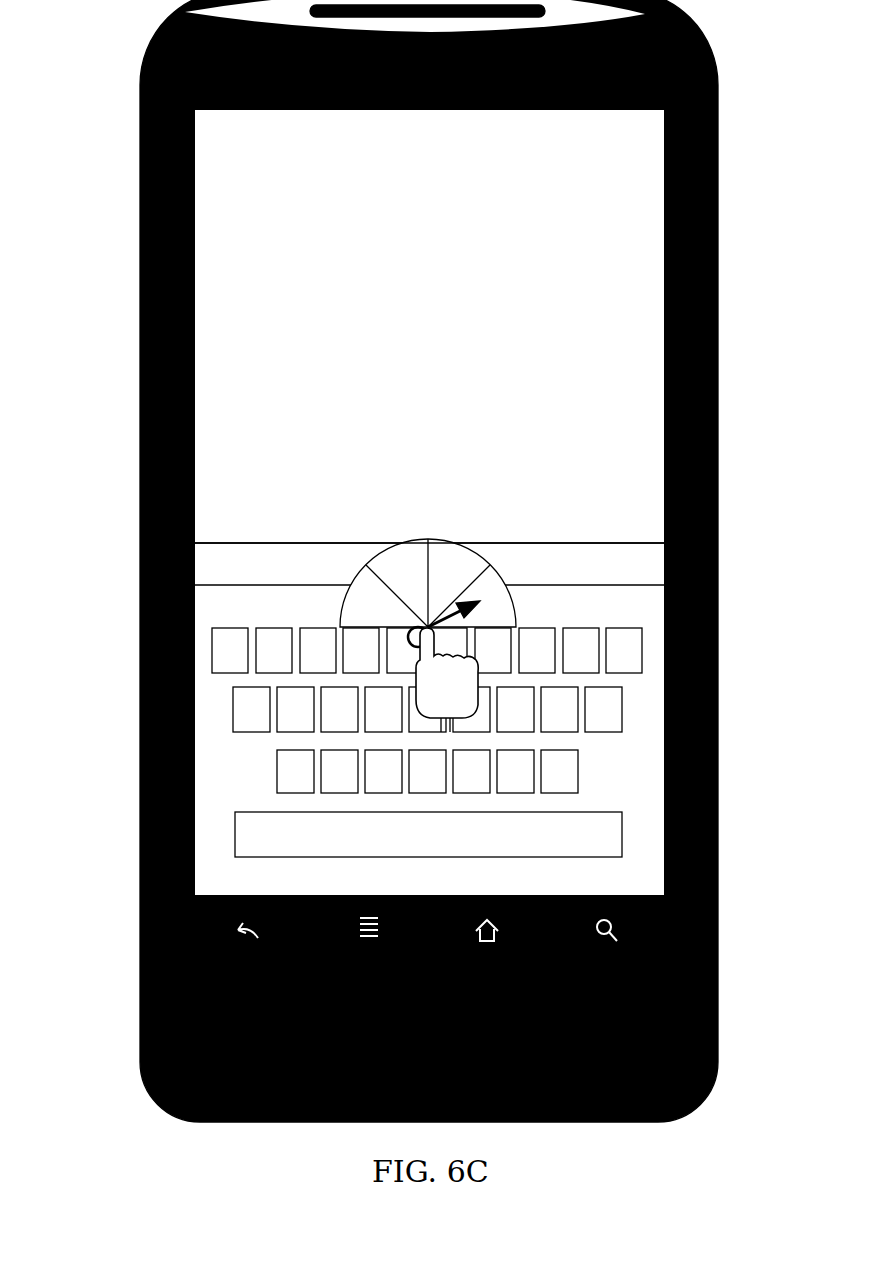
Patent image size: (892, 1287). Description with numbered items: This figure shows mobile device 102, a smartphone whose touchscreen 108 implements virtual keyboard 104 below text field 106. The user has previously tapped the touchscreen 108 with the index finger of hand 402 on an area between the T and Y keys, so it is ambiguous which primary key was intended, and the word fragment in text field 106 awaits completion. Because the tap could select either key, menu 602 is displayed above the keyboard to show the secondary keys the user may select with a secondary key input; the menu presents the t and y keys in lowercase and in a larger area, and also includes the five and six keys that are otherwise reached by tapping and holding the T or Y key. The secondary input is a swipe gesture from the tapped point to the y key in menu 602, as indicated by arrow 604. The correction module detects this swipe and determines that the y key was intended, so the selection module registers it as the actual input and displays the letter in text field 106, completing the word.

The mobile device 102 is at (140, 81).
The touchscreen 108 is at (220, 255).
The text field 106 is at (718, 542).
The virtual keyboard 104 is at (718, 594).
The menu 602 is at (388, 552).
The arrow 604 is at (470, 603).
The hand 402 is at (443, 679).